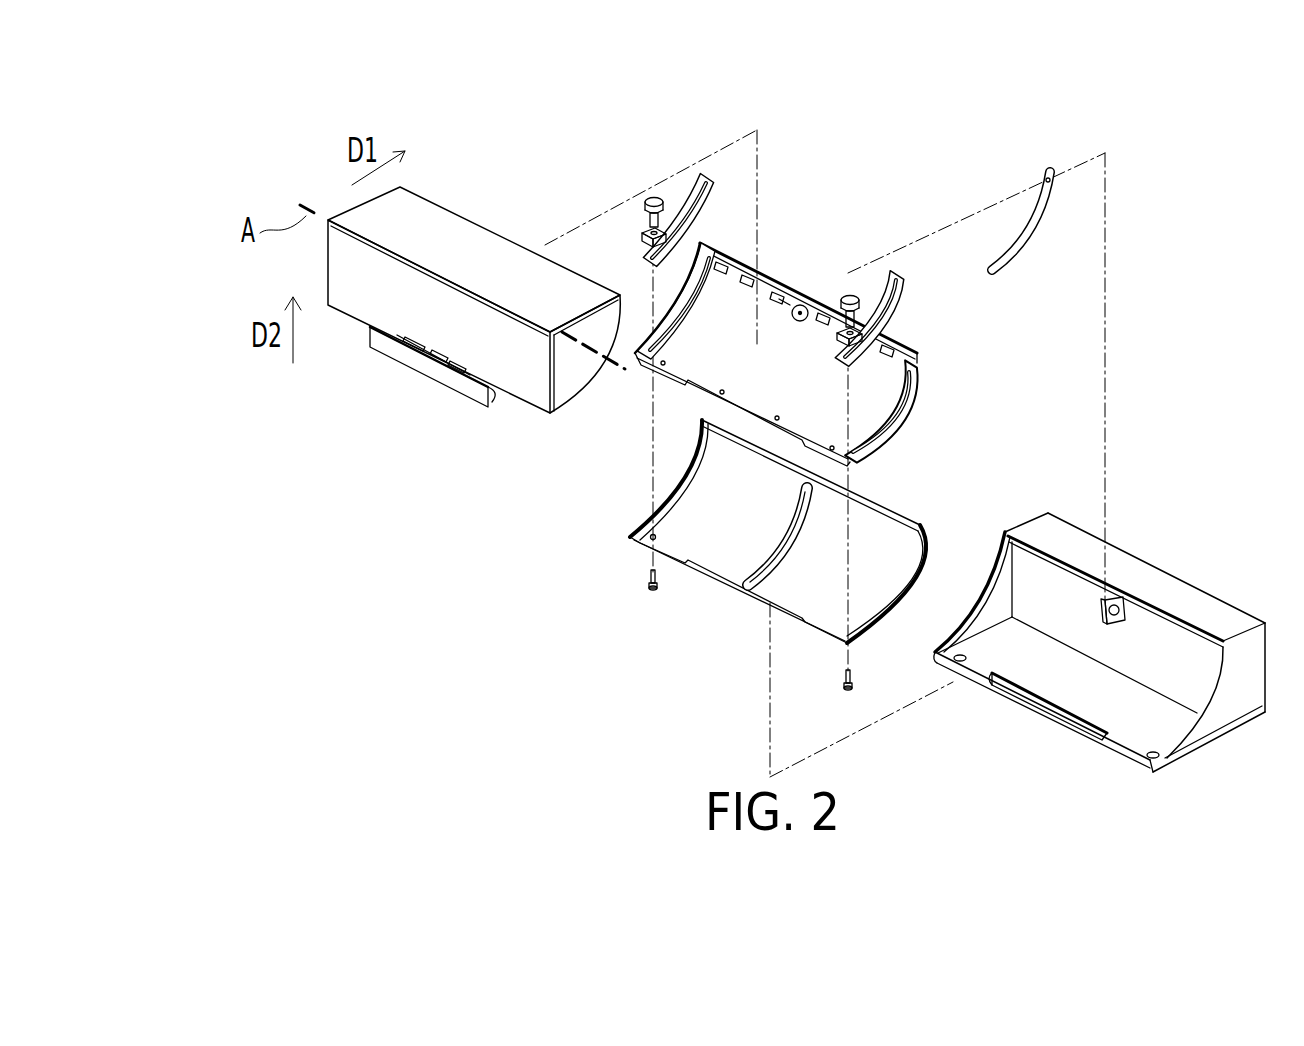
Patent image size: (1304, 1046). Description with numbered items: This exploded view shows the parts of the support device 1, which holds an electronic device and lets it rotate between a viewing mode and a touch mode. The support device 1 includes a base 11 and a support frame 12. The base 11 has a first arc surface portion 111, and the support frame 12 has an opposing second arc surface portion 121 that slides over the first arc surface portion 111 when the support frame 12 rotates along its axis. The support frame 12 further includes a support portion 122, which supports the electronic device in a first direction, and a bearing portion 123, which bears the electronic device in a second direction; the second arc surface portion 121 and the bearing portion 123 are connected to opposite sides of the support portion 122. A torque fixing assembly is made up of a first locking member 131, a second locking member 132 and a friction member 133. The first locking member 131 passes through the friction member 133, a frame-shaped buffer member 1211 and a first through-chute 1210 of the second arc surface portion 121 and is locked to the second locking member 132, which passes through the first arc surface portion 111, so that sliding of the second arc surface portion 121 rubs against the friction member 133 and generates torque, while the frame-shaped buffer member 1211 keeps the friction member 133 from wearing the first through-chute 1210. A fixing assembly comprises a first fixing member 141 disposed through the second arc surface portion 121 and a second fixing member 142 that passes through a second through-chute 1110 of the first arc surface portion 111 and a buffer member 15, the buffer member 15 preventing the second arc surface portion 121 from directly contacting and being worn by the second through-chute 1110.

The support device 1 is at (273, 145).
The base 11 is at (942, 755).
The first arc surface portion 111 is at (718, 545).
The second through-chute 1110 is at (752, 572).
The support frame 12 is at (561, 184).
The second arc surface portion 121 is at (767, 272).
The first through-chute 1210 is at (883, 427).
The frame-shaped buffer member 1211 is at (908, 287).
The support portion 122 is at (340, 257).
The bearing portion 123 is at (400, 350).
The first locking member 131 is at (893, 320).
The second locking member 132 is at (648, 578).
The friction member 133 is at (897, 355).
The first fixing member 141 is at (798, 298).
The second fixing member 142 is at (1115, 598).
The buffer member 15 is at (1048, 170).